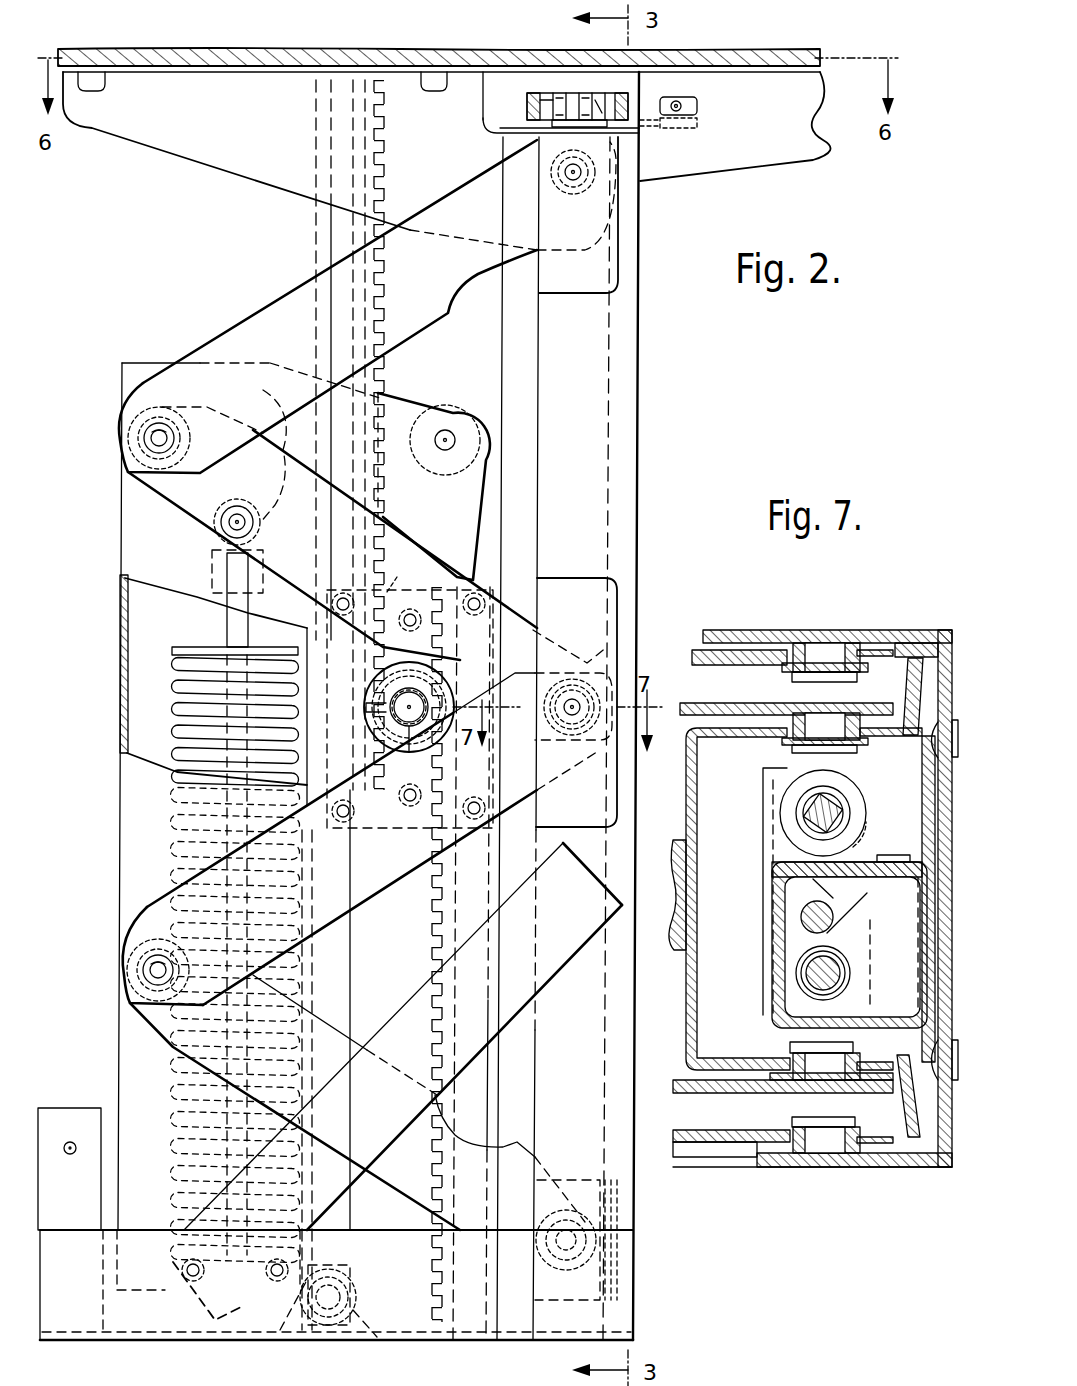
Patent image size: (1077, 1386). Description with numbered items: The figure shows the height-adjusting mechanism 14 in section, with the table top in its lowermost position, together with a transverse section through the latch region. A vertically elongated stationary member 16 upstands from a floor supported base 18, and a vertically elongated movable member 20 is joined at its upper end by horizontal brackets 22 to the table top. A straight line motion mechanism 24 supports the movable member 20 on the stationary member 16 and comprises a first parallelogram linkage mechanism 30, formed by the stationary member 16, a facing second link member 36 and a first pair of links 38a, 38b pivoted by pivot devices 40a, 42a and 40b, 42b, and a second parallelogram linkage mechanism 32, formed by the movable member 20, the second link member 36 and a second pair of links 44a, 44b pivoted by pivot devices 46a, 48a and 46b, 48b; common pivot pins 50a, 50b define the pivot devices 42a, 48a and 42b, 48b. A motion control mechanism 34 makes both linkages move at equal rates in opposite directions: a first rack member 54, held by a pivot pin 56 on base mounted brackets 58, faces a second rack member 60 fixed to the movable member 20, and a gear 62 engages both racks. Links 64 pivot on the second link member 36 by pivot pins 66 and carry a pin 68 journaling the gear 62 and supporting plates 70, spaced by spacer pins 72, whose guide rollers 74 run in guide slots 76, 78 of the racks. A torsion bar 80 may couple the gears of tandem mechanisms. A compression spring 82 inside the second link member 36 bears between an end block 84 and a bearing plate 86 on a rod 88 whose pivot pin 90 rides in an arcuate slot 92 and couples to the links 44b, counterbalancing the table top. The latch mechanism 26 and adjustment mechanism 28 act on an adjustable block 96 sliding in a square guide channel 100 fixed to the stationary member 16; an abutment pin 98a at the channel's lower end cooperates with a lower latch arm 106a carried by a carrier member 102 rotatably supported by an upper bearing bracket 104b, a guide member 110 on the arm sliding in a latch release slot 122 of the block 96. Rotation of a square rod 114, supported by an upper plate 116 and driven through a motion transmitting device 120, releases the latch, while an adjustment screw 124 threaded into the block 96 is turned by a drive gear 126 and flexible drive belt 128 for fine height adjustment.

In FIG. 2, the mechanism 14 is at (665, 407).
In FIG. 2, the stationary member 16 is at (638, 372).
In FIG. 7, the stationary member 16 is at (958, 1122).
In FIG. 2, the base 18 is at (635, 1312).
In FIG. 2, the movable member 20 is at (497, 328).
In FIG. 7, the movable member 20 is at (684, 965).
In FIG. 2, the brackets 22 is at (752, 172).
In FIG. 2, the straight line motion mechanism 24 is at (107, 458).
In FIG. 7, the latch mechanism 26 is at (757, 766).
In FIG. 7, the adjustment mechanism 28 is at (798, 997).
In FIG. 2, the first parallelogram linkage mechanism 30 is at (280, 292).
In FIG. 2, the second parallelogram linkage mechanism 32 is at (463, 566).
In FIG. 2, the motion control mechanism 34 is at (412, 390).
In FIG. 2, the second link member 36 is at (120, 645).
In FIG. 2, the link 38a is at (372, 905).
In FIG. 7, the link 38a is at (738, 630).
In FIG. 2, the link 38b is at (250, 330).
In FIG. 2, the pivot device 40a is at (572, 707).
In FIG. 7, the pivot device 40a is at (822, 650).
In FIG. 2, the pivot device 40b is at (620, 158).
In FIG. 2, the pivot device 42a is at (163, 968).
In FIG. 2, the pivot device 42b is at (159, 425).
In FIG. 2, the link 44a is at (322, 1020).
In FIG. 2, the link 44b is at (402, 540).
In FIG. 7, the link 44b is at (747, 703).
In FIG. 2, the pivot device 46a is at (595, 1252).
In FIG. 2, the pivot device 46b is at (618, 630).
In FIG. 7, the pivot device 46b is at (823, 725).
In FIG. 2, the pivot device 48a is at (158, 970).
In FIG. 2, the pivot device 48b is at (159, 438).
In FIG. 2, the common pivot pin 50a is at (158, 970).
In FIG. 2, the common pivot pin 50b is at (159, 438).
In FIG. 2, the first rack member 54 is at (333, 200).
In FIG. 2, the pivot pin 56 is at (338, 1280).
In FIG. 2, the brackets 58 is at (360, 1316).
In FIG. 2, the second rack member 60 is at (432, 925).
In FIG. 7, the second rack member 60 is at (678, 840).
In FIG. 2, the gear 62 is at (447, 674).
In FIG. 2, the link 64 is at (476, 497).
In FIG. 2, the pivot pin 66 is at (450, 430).
In FIG. 2, the pin 68 is at (409, 755).
In FIG. 2, the plates 70 is at (399, 578).
In FIG. 2, the spacer pins 72 is at (452, 574).
In FIG. 2, the guide rollers 74 is at (342, 544).
In FIG. 2, the guide slots 76 is at (333, 222).
In FIG. 2, the guide slots 78 is at (500, 848).
In FIG. 2, the torsion bar 80 is at (443, 702).
In FIG. 2, the compression spring 82 is at (170, 688).
In FIG. 2, the end block 84 is at (163, 1287).
In FIG. 2, the bearing plate 86 is at (172, 640).
In FIG. 2, the rod 88 is at (227, 627).
In FIG. 2, the pivot pin 90 is at (235, 533).
In FIG. 2, the arcuate slot 92 is at (265, 462).
In FIG. 7, the adjustable block 96 is at (866, 946).
In FIG. 7, the abutment pin 98a is at (920, 943).
In FIG. 7, the guide channel 100 is at (772, 876).
In FIG. 7, the carrier member 102 is at (842, 795).
In FIG. 7, the upper bearing bracket 104b is at (763, 795).
In FIG. 7, the lower latch arm 106a is at (868, 845).
In FIG. 7, the guide member 110 is at (806, 915).
In FIG. 7, the rod 114 is at (845, 806).
In FIG. 2, the upper plate 116 is at (500, 128).
In FIG. 2, the motion transmitting device 120 is at (698, 107).
In FIG. 7, the latch release slot 122 is at (895, 897).
In FIG. 7, the adjustment screw 124 is at (800, 977).
In FIG. 2, the drive gear 126 is at (558, 93).
In FIG. 2, the flexible drive belt 128 is at (527, 100).